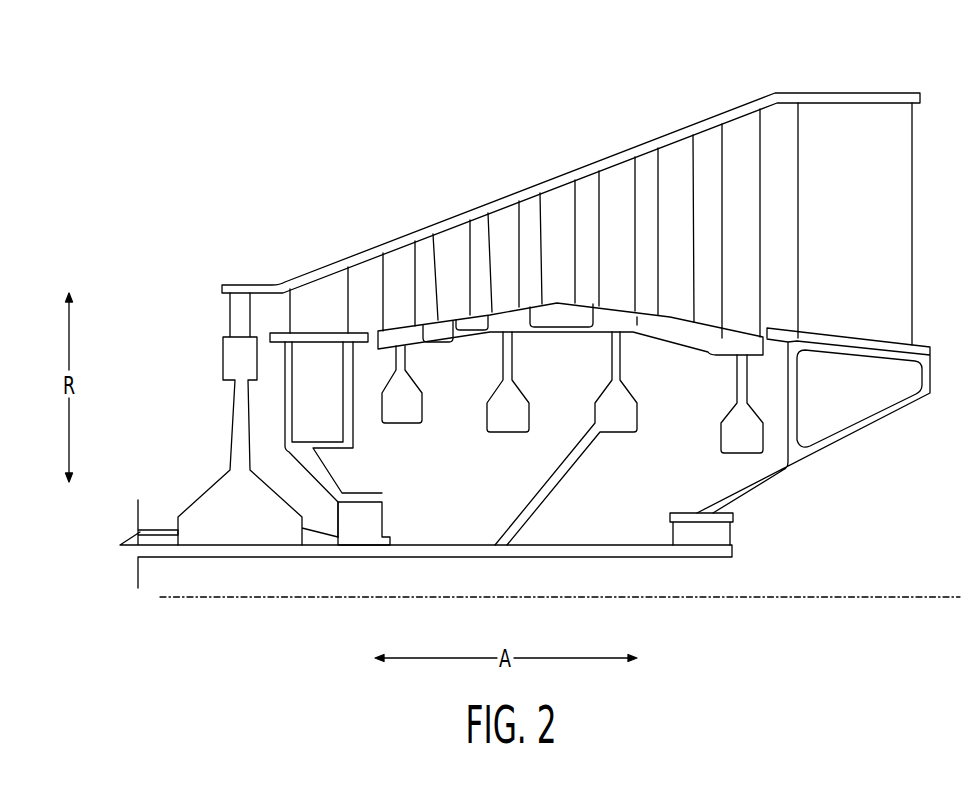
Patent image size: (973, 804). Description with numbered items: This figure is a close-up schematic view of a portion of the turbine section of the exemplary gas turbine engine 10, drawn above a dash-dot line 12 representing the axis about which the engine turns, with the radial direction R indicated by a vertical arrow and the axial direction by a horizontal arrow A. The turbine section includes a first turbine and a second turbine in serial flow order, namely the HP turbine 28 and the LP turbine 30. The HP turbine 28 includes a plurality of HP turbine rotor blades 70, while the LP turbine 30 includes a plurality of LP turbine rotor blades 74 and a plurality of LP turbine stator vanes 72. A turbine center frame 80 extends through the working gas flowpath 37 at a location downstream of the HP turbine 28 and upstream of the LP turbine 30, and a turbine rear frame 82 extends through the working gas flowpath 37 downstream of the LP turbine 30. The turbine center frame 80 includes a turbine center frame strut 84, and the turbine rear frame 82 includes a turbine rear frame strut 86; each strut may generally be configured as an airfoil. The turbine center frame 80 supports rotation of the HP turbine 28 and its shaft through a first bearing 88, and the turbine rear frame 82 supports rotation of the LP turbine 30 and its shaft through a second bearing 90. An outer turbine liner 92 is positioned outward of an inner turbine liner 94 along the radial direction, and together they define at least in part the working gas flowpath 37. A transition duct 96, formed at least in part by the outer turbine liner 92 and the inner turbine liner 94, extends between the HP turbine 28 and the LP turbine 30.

The gas turbine engine 10 is at (283, 118).
The engine central longitudinal axis 12 is at (880, 600).
The HP turbine 28 is at (218, 222).
The LP turbine 30 is at (607, 108).
The working gas flowpath 37 is at (478, 243).
The HP turbine rotor blades 70 is at (237, 322).
The LP turbine stator vanes 72 is at (555, 208).
The LP turbine rotor blades 74 is at (738, 132).
The turbine center frame 80 is at (343, 263).
The turbine rear frame 82 is at (858, 128).
The turbine center frame strut 84 is at (315, 307).
The turbine rear frame strut 86 is at (882, 175).
The first bearing 88 is at (372, 518).
The second bearing 90 is at (718, 537).
The outer turbine liner 92 is at (422, 232).
The inner turbine liner 94 is at (330, 337).
The transition duct 96 is at (364, 193).